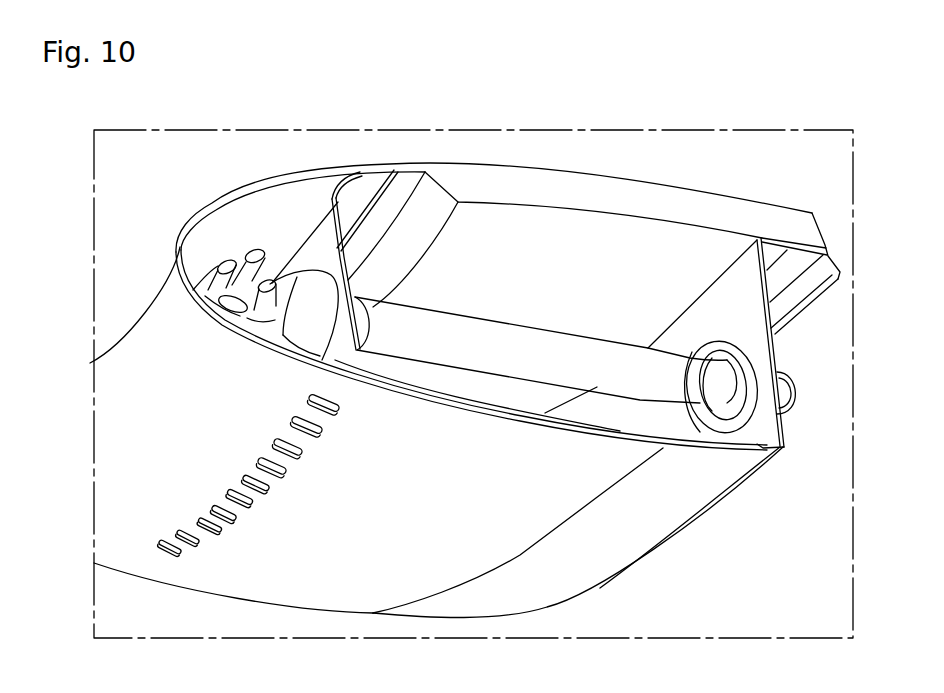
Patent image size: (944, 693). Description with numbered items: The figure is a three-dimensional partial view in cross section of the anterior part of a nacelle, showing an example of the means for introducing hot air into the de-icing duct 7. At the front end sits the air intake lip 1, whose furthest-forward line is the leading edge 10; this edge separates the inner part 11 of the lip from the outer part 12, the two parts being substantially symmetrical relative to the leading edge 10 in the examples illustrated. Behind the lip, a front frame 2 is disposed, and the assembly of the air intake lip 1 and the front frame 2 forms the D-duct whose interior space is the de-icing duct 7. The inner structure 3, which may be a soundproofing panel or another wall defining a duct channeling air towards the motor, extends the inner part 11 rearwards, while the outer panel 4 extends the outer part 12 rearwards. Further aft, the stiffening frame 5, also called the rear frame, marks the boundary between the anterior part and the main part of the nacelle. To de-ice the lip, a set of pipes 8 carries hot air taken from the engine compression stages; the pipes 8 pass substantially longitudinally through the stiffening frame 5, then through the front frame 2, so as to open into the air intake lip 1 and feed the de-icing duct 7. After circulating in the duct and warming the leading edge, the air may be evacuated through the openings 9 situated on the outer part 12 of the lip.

The air intake lip 1 is at (137, 420).
The front frame 2 is at (327, 243).
The inner structure 3 is at (485, 187).
The outer panel 4 is at (338, 563).
The stiffening frame 5 is at (787, 433).
The de-icing duct 7 is at (247, 217).
The pipes 8 is at (607, 368).
The openings 9 is at (243, 473).
The leading edge 10 is at (128, 368).
The inner part 11 is at (335, 168).
The outer part 12 is at (240, 547).